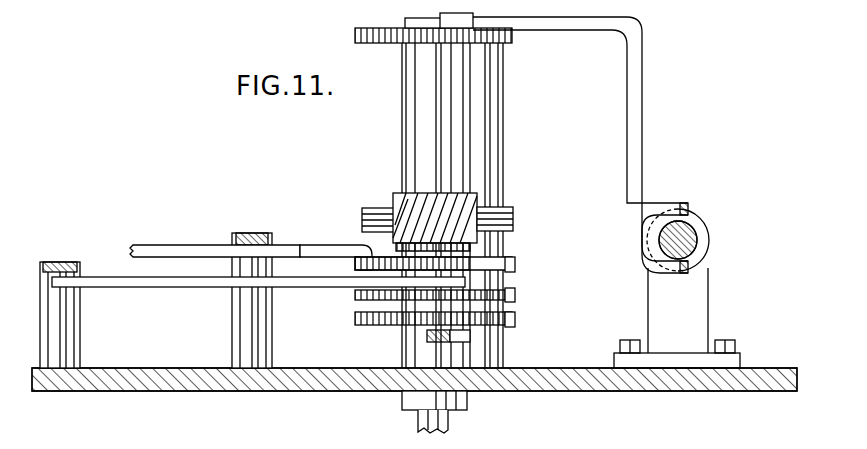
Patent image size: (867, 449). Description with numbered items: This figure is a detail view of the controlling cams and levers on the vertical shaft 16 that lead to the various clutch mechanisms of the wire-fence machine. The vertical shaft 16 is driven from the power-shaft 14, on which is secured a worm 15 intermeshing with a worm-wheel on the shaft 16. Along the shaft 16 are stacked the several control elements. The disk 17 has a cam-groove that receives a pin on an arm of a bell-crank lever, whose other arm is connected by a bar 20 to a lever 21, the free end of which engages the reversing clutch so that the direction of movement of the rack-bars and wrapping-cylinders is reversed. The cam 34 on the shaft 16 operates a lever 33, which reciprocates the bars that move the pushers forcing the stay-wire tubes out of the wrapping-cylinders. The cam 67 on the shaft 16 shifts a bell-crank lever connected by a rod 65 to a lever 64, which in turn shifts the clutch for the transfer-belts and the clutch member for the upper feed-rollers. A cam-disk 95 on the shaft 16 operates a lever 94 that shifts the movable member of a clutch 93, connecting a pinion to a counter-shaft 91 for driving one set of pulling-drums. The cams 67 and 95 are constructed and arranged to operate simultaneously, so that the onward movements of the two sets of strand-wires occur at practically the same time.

The cam-disk 95 is at (388, 22).
The lever 94 is at (586, 30).
The worm 15 is at (414, 205).
The power-shaft 14 is at (514, 220).
The lever 21 is at (72, 262).
The rod 65 is at (196, 238).
The lever 64 is at (262, 240).
The cam 67 is at (368, 244).
The bar 20 is at (164, 281).
The disk 17 is at (356, 296).
The cam 34 is at (356, 318).
The lever 33 is at (427, 336).
The vertical shaft 16 is at (420, 426).
The clutch 93 is at (699, 236).
The bearing support 91 is at (696, 250).